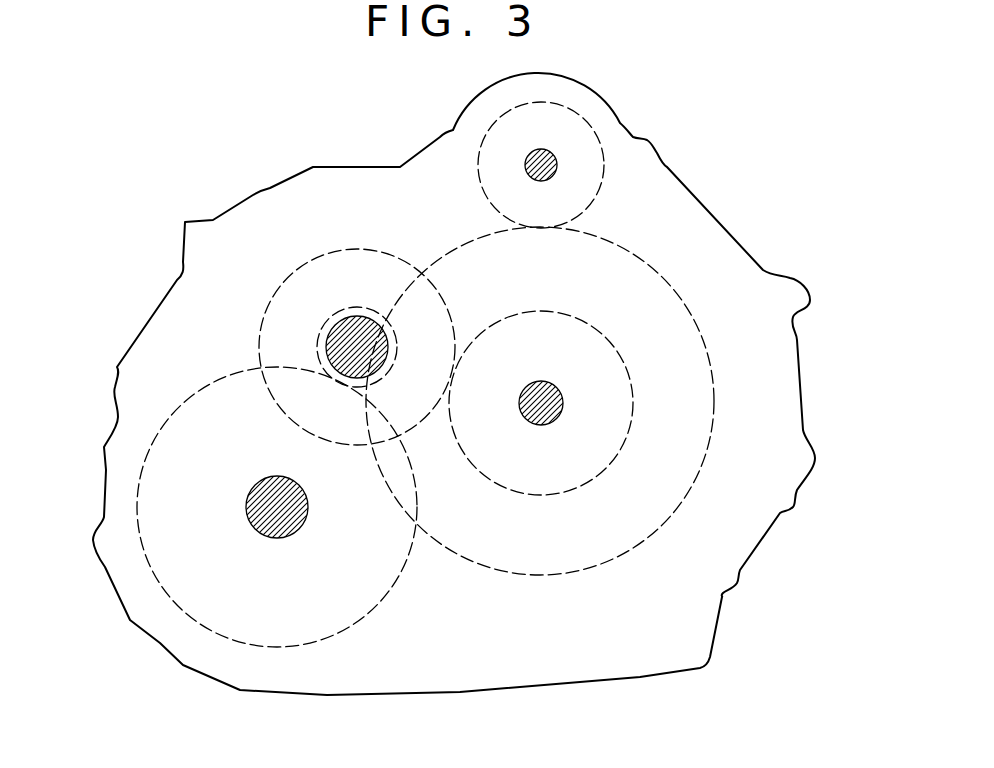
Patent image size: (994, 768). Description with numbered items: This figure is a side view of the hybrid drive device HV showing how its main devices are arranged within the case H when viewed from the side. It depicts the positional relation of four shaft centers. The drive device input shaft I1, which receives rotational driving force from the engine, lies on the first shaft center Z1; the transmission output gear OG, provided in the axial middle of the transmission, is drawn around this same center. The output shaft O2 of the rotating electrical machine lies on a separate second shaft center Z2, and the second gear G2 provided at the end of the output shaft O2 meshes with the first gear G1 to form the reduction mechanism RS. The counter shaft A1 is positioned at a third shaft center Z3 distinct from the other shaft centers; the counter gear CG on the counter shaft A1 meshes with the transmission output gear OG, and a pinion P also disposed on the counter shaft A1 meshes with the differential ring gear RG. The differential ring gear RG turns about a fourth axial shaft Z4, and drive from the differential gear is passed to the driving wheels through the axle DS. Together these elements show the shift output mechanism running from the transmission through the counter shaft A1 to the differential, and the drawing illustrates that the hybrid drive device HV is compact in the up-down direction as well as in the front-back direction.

The hybrid drive device HV is at (138, 306).
The case H is at (762, 548).
The second shaft center Z2 is at (533, 157).
The output shaft O2 is at (525, 168).
The second gear G2 is at (604, 165).
The first gear G1 is at (660, 267).
The reduction mechanism RS is at (767, 145).
The counter gear CG is at (367, 248).
The counter shaft A1 is at (357, 314).
The third shaft center Z3 is at (338, 321).
The pinion P is at (320, 346).
The drive device input shaft I1 is at (541, 382).
The first shaft center Z1 is at (562, 416).
The transmission output gear OG is at (498, 483).
The fourth axial shaft Z4 is at (273, 500).
The axle DS is at (277, 538).
The differential ring gear RG is at (360, 620).